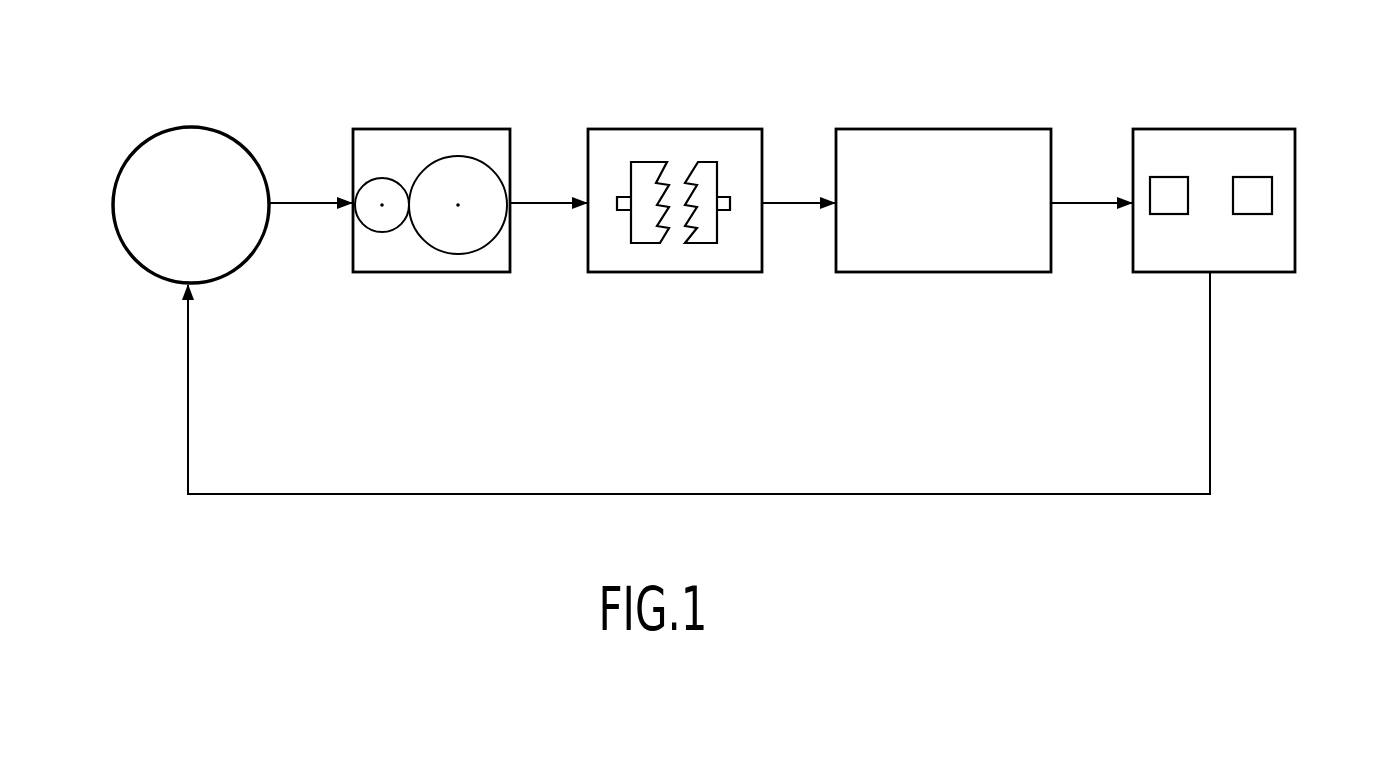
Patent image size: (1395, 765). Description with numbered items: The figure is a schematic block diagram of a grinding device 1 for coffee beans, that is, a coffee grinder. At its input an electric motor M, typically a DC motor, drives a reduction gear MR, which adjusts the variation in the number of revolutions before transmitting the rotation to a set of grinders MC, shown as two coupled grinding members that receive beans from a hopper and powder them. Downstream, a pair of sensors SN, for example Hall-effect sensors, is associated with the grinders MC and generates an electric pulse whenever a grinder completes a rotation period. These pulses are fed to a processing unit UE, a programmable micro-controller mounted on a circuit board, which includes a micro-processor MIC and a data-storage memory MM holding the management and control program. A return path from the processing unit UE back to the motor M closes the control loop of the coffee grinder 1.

The grinding device 1 is at (682, 453).
The electric motor M is at (188, 158).
The reduction gear MR is at (402, 155).
The grinders MC is at (658, 150).
The sensors SN is at (925, 157).
The processing unit UE is at (1213, 153).
The micro-processor MIC is at (1165, 190).
The data-storage memory MM is at (1258, 197).